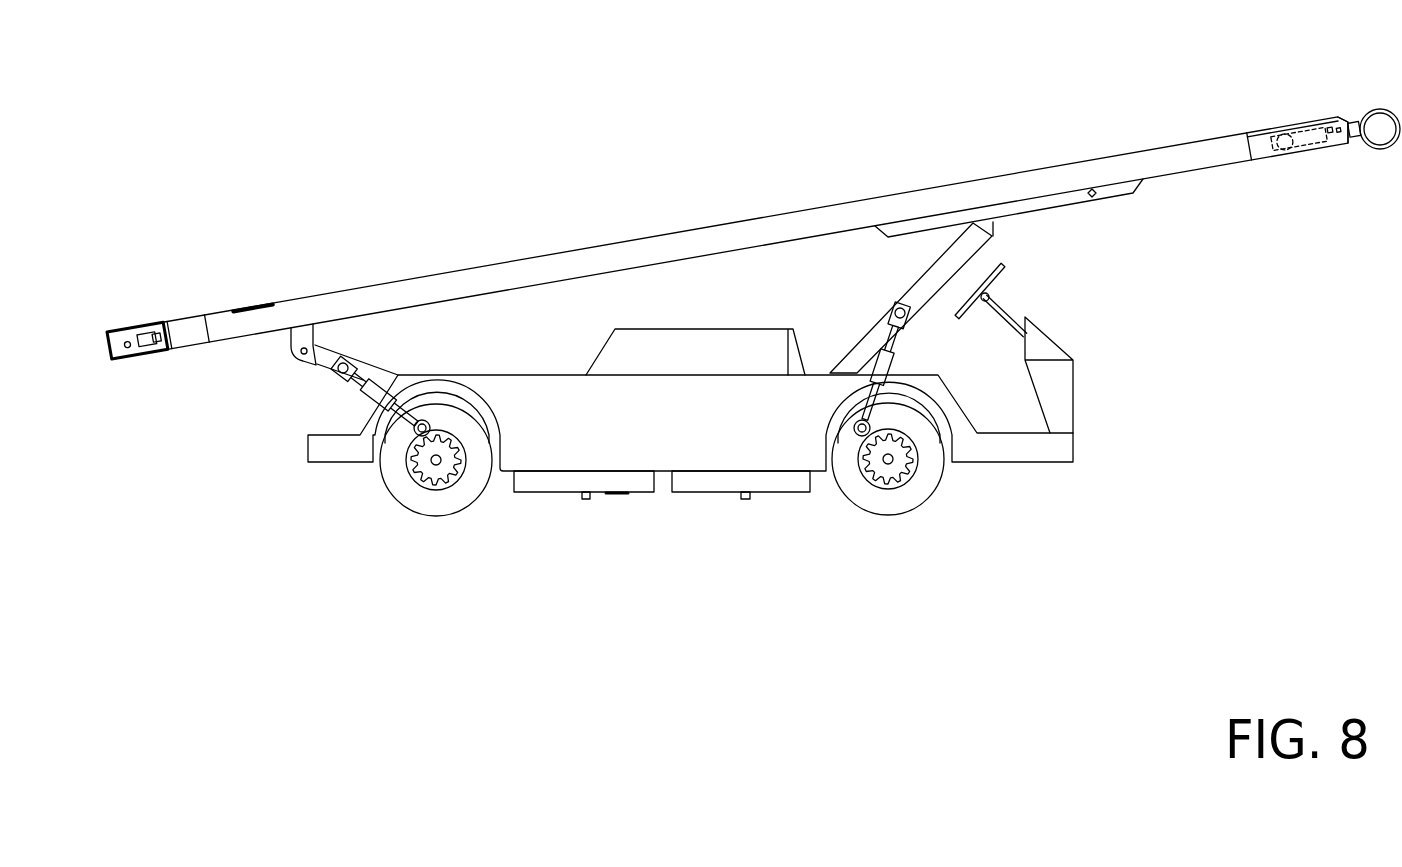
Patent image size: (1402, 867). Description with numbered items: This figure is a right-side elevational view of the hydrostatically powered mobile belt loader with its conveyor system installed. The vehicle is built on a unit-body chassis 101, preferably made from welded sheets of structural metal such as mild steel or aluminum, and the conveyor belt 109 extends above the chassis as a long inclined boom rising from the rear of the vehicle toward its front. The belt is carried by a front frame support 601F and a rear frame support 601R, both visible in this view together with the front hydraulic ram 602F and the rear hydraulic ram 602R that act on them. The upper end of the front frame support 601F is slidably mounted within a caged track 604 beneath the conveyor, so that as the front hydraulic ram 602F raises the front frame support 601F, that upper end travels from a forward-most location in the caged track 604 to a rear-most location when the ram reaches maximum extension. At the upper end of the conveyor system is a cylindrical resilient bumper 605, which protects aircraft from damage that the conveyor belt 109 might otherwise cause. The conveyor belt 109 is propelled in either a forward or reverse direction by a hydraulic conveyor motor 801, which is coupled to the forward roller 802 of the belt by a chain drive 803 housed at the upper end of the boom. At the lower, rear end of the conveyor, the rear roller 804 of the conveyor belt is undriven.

The unit-body chassis 101 is at (543, 408).
The conveyor belt 109 is at (657, 247).
The front frame support 601F is at (923, 287).
The rear frame support 601R is at (320, 368).
The front hydraulic ram 602F is at (890, 377).
The rear hydraulic ram 602R is at (363, 380).
The caged track 604 is at (1030, 208).
The resilient bumper 605 is at (1365, 96).
The hydraulic conveyor motor 801 is at (1260, 142).
The forward roller 802 is at (1332, 108).
The chain drive 803 is at (1312, 162).
The rear roller 804 is at (122, 332).